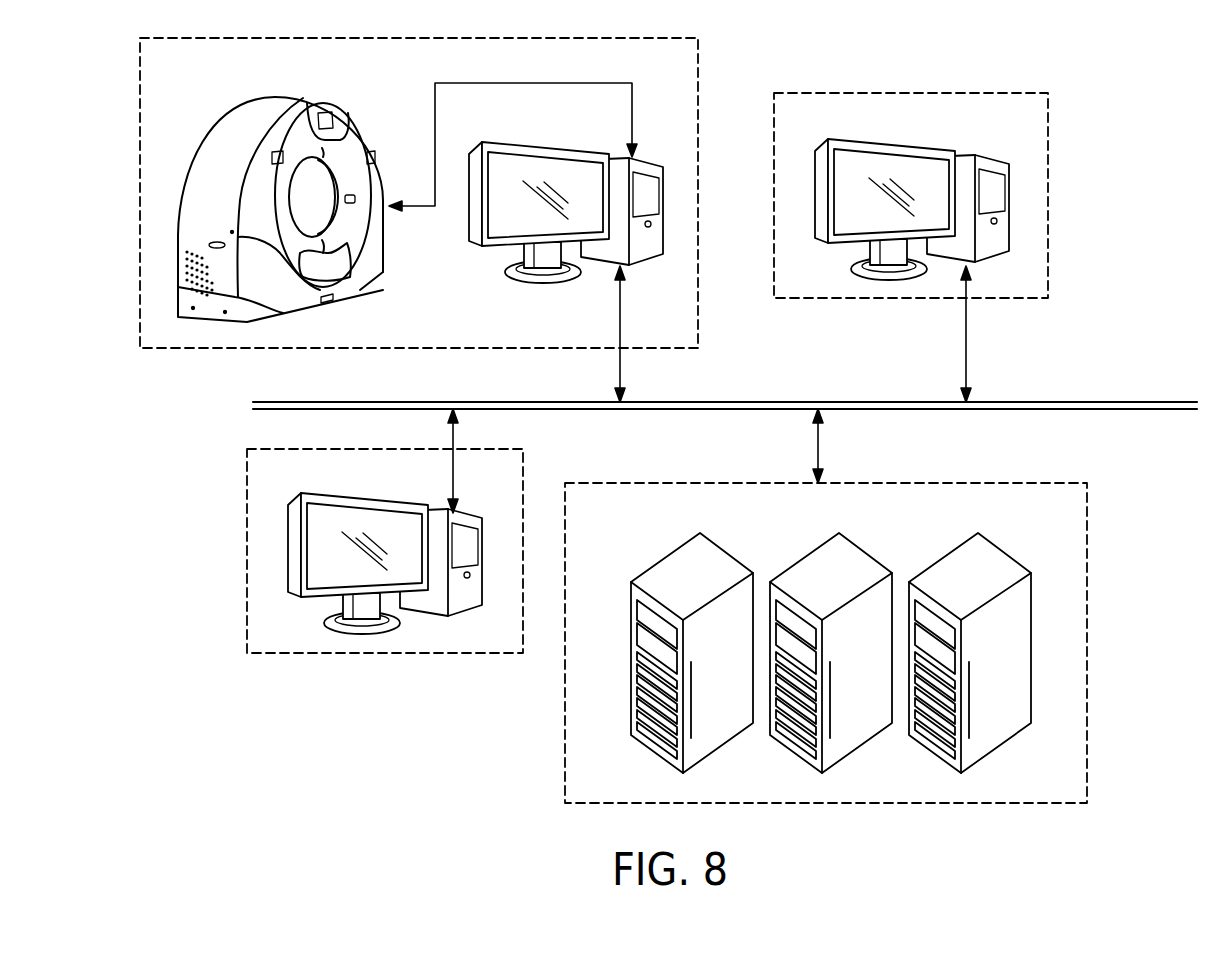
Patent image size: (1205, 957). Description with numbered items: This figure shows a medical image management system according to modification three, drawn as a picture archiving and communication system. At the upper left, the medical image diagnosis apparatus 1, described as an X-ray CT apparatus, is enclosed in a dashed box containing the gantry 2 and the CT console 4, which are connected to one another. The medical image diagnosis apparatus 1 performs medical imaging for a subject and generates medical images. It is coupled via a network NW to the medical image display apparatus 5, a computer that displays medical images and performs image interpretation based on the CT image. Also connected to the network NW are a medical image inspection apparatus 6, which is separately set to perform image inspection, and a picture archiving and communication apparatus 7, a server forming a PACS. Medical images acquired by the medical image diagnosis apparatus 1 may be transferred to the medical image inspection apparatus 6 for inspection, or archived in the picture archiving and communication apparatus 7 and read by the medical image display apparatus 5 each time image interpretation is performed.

The medical image diagnosis apparatus 1 is at (700, 62).
The gantry 2 is at (368, 128).
The CT console 4 is at (561, 143).
The medical image display apparatus 5 is at (453, 656).
The medical image inspection apparatus 6 is at (1050, 149).
The picture archiving and communication apparatus 7 is at (1089, 603).
The network NW is at (1136, 400).